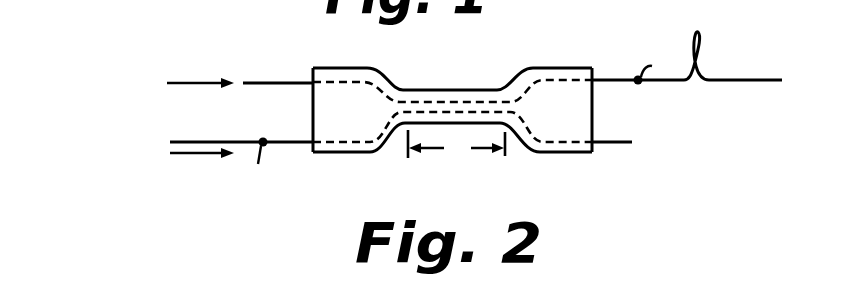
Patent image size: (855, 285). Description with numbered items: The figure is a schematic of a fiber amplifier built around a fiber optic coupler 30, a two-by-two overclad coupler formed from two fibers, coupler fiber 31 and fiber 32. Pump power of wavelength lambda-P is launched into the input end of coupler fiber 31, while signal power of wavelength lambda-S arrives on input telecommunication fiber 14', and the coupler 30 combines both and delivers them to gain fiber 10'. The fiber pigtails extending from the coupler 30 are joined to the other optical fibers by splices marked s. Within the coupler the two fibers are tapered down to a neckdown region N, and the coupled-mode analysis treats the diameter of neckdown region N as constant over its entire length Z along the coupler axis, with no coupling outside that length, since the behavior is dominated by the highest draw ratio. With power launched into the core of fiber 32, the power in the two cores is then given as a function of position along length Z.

The fiber optic coupler 30 is at (568, 60).
The coupler fiber 31 is at (645, 107).
The coupler fiber 32 is at (386, 159).
The input telecommunication fiber 14' is at (205, 150).
The gain fiber 10' is at (722, 49).
The neckdown region N is at (428, 90).
The length of the neckdown region Z is at (456, 148).